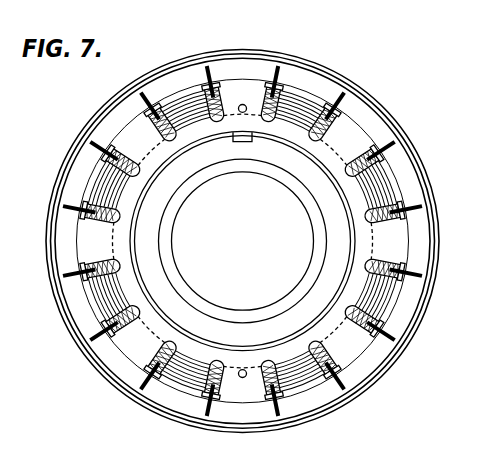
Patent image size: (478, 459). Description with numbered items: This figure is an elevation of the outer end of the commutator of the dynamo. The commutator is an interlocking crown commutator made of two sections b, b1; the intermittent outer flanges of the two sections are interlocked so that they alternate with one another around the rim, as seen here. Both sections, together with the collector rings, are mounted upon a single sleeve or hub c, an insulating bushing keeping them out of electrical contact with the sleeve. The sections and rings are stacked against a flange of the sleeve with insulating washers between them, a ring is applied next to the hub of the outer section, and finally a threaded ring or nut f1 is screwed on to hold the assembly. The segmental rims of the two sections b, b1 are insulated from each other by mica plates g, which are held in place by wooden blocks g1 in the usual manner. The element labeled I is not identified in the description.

The field magnet frame (outer shell) I is at (80, 315).
The commutator section b is at (319, 88).
The commutator section b1 is at (367, 143).
The sleeve or hub c is at (243, 316).
The threaded ring or nut f1 is at (341, 302).
The mica plates g is at (422, 206).
The wooden blocks g1 is at (399, 266).